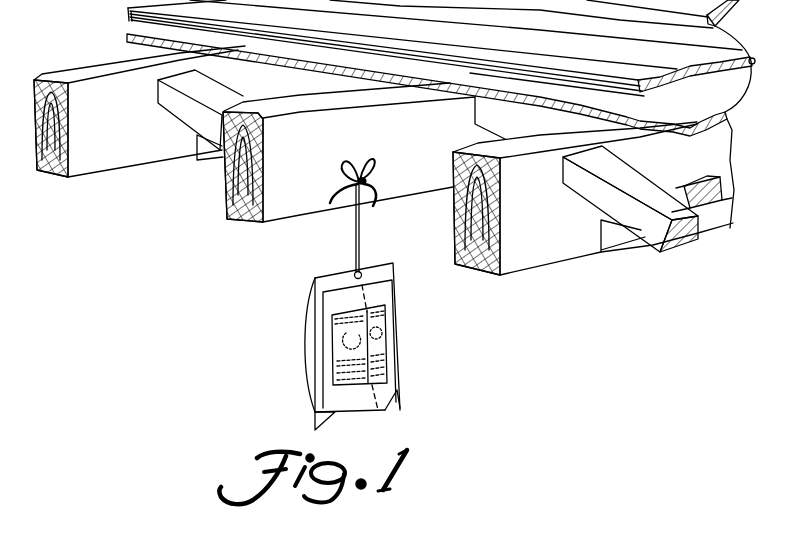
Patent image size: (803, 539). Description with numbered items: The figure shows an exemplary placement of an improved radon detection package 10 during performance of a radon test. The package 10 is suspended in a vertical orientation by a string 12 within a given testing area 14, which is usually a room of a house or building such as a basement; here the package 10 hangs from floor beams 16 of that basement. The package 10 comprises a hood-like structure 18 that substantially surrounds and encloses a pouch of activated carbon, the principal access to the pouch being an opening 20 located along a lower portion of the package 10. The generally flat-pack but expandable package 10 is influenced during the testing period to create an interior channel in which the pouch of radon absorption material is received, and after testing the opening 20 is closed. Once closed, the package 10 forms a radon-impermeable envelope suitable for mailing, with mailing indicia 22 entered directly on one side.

The radon detection package 10 is at (419, 333).
The string 12 is at (355, 246).
The testing area 14 is at (204, 285).
The floor beams 16 is at (403, 195).
The hood-like structure 18 is at (337, 396).
The opening 20 is at (363, 409).
The mailing indicia 22 is at (338, 324).